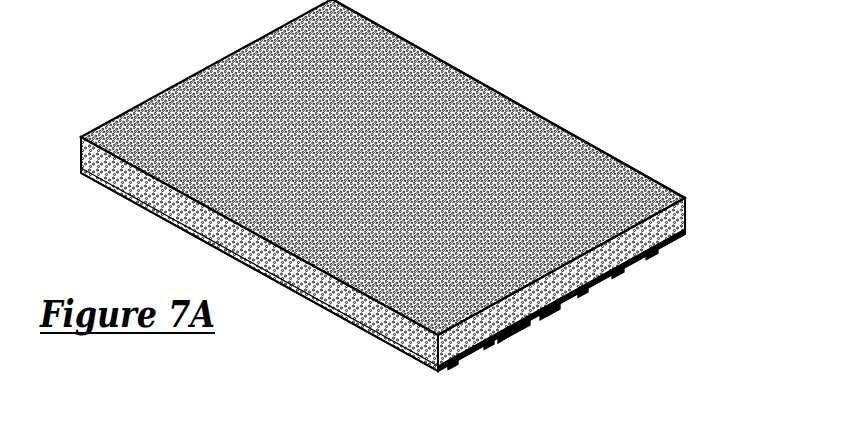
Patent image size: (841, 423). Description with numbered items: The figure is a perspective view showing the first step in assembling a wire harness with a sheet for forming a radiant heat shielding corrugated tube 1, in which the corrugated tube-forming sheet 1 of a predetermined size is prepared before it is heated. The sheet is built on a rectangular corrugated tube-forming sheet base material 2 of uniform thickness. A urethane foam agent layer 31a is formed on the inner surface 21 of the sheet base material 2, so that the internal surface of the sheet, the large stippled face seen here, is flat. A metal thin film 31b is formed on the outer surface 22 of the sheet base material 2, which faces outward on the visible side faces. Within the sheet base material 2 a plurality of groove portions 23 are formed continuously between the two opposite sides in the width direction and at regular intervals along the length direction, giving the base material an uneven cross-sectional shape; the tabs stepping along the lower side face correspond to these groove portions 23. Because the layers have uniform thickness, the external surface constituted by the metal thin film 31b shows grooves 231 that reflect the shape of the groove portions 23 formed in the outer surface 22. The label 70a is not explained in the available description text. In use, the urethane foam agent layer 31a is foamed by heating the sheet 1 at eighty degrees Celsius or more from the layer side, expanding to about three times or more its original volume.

The sheet for forming a radiant heat shielding corrugated tube 1 is at (524, 78).
The urethane foam agent layer 31a is at (583, 147).
The metal thin film 31b is at (362, 328).
The bottom plate 70a is at (383, 295).
The groove portion 23 is at (458, 364).
The groove 231 is at (465, 376).
The corrugated tube-forming sheet base material 2 is at (516, 337).
The inner surface 21 is at (548, 310).
The outer surface 22 is at (507, 343).